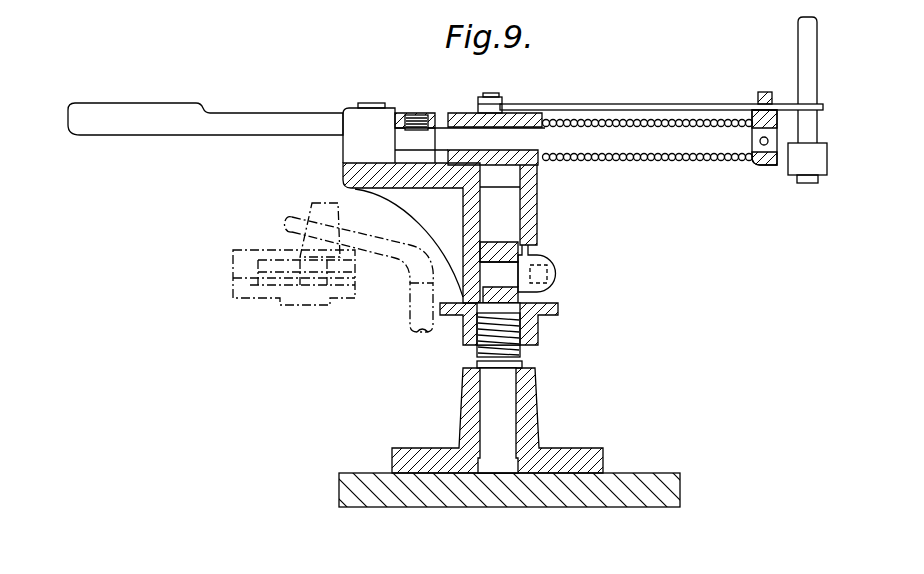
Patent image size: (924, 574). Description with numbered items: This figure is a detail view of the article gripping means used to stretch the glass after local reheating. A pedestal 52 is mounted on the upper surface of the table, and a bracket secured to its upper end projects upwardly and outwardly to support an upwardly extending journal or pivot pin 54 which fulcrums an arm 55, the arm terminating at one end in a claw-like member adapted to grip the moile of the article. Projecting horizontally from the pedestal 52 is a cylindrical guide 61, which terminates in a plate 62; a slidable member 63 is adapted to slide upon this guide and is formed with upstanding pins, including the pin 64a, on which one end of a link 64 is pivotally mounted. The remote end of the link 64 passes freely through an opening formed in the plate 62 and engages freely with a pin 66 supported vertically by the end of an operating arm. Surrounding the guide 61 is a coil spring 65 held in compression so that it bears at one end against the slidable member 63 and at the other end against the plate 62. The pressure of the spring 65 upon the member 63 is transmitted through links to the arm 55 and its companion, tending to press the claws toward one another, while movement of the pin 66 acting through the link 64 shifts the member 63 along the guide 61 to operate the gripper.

The pedestal 52 is at (500, 225).
The journal or pivot pin 54 is at (366, 101).
The arm 55 is at (232, 126).
The cylindrical guide 61 is at (648, 142).
The plate 62 is at (758, 97).
The slidable member 63 is at (543, 162).
The link 64 is at (623, 104).
The upstanding pin 64a is at (503, 105).
The coil spring 65 is at (703, 155).
The pin 66 is at (810, 70).